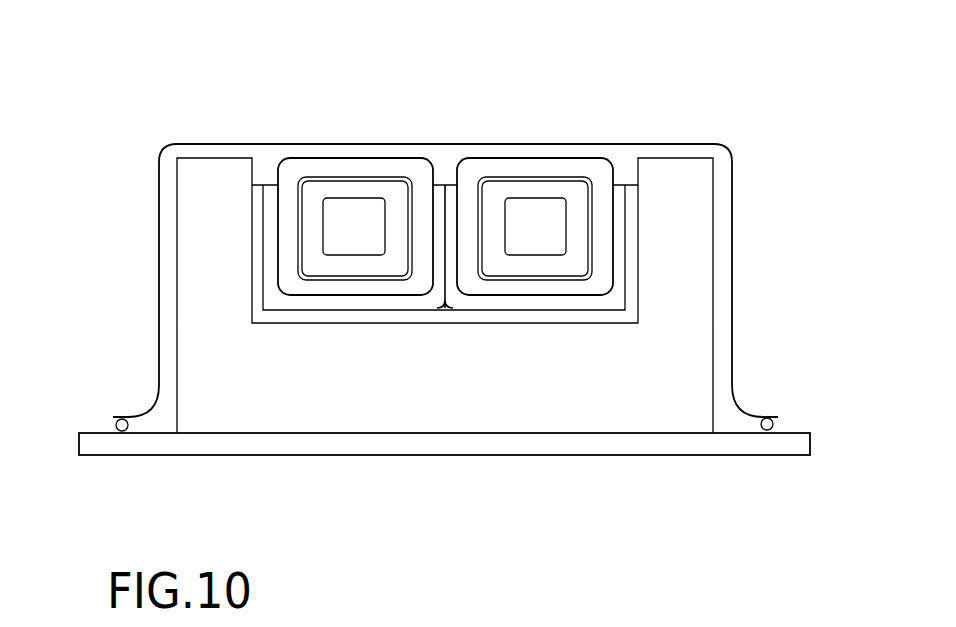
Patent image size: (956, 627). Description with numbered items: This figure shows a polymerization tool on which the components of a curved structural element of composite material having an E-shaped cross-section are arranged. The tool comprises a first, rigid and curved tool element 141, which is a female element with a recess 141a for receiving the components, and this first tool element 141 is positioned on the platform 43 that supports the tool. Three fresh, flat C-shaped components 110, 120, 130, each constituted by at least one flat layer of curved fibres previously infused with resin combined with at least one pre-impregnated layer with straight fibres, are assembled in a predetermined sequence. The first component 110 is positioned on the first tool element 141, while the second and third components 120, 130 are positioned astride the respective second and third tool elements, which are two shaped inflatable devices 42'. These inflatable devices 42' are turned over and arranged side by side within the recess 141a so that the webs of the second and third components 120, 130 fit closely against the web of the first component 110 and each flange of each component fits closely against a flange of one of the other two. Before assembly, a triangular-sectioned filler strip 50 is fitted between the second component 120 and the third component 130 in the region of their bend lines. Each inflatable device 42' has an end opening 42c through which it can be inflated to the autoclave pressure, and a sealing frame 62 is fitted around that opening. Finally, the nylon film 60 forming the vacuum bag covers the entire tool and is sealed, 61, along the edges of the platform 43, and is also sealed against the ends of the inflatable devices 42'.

The nylon film 60 is at (159, 215).
The first tool element 141 is at (168, 268).
The recess 141a is at (620, 310).
The seal 61 is at (125, 417).
The platform 43 is at (247, 456).
The second component 120 is at (320, 320).
The first component 110 is at (418, 330).
The filler strip 50 is at (445, 312).
The third component 130 is at (535, 320).
The inflatable device 42' is at (445, 169).
The opening 42c is at (327, 227).
The sealing frame 62 is at (404, 175).